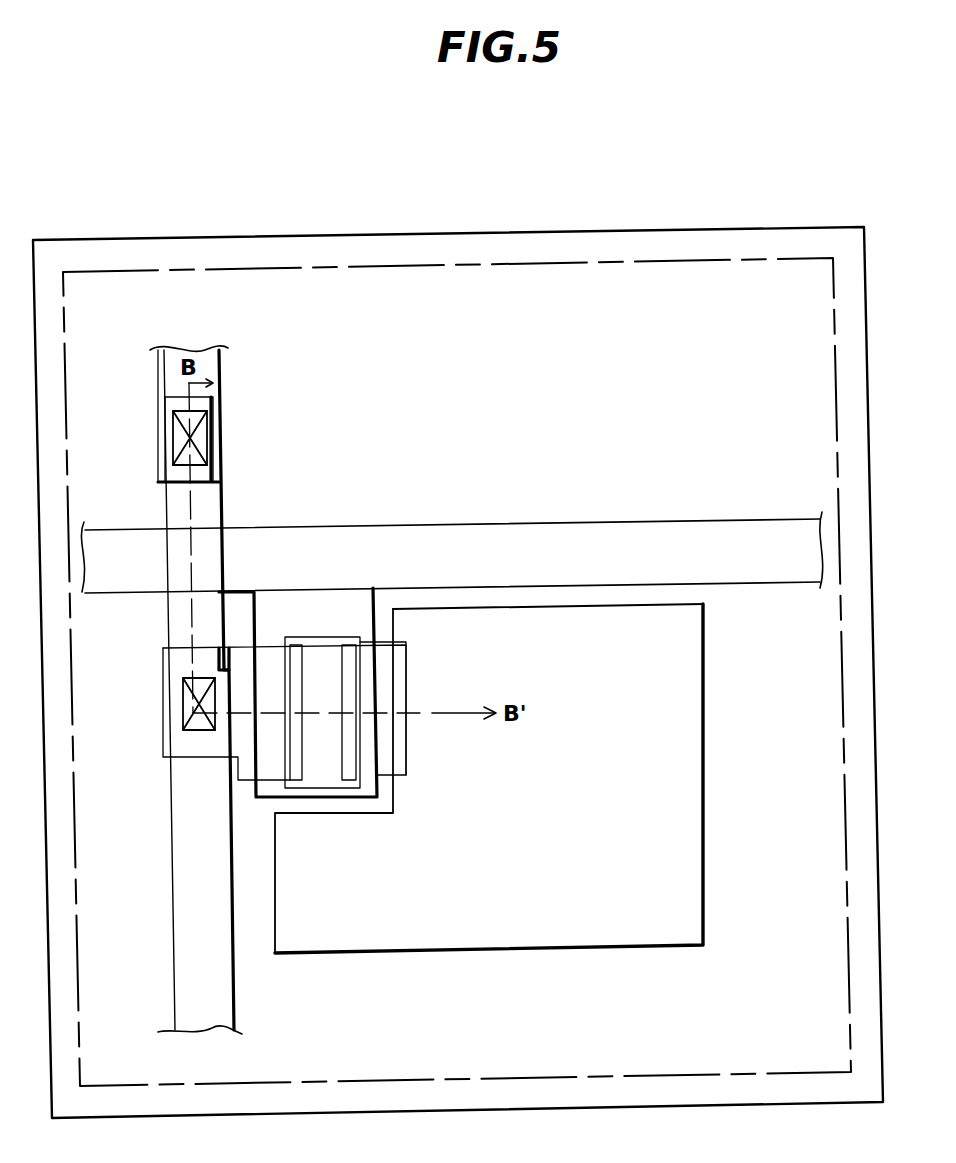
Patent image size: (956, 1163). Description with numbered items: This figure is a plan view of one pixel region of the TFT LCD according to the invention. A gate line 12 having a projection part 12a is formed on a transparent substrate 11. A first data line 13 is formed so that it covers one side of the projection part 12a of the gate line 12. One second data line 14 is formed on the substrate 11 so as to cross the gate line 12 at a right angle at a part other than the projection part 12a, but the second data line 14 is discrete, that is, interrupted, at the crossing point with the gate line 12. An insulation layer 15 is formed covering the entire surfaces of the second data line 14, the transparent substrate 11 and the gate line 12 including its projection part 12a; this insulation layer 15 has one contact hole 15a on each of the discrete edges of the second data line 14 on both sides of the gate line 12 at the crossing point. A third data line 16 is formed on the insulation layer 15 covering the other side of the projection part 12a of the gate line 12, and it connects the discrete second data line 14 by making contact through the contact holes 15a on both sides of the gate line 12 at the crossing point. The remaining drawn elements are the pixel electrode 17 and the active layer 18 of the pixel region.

The transparent substrate 11 is at (792, 225).
The gate line 12 is at (737, 540).
The projection part 12a is at (373, 678).
The first data line 13 is at (405, 732).
The second data line 14 is at (215, 413).
The insulation layer 15 is at (669, 258).
The contact hole 15a is at (190, 703).
The third data line 16 is at (183, 622).
The pixel electrode 17 is at (685, 770).
The active layer 18 is at (318, 733).